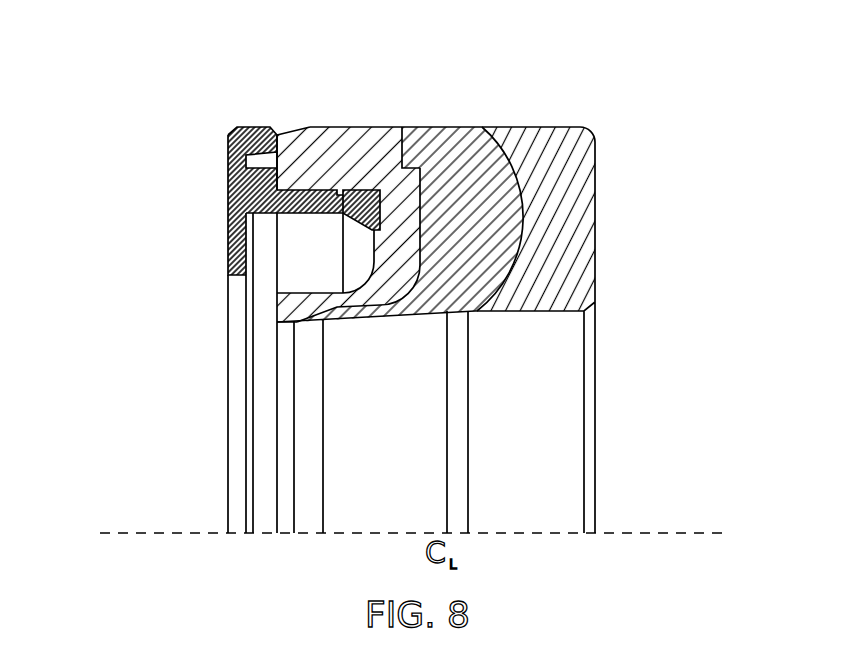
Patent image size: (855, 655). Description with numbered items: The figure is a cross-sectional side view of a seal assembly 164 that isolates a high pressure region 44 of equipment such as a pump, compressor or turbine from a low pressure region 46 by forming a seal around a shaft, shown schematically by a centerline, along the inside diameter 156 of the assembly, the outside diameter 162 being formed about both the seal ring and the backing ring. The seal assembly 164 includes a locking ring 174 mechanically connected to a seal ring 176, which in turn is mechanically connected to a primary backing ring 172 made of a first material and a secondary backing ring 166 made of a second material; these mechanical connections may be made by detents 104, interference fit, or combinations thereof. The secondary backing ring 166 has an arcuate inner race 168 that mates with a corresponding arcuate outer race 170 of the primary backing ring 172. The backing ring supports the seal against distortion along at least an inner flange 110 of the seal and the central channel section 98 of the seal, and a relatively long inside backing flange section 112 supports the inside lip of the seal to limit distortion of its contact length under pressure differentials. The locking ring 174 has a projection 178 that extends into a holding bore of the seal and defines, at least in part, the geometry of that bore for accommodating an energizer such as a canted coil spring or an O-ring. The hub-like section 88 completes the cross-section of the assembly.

The high pressure region 44 is at (128, 288).
The low pressure region 46 is at (717, 285).
The hub 88 is at (297, 266).
The center channel section 98 is at (397, 139).
The detent 104 is at (423, 142).
The inner flange 110 is at (289, 312).
The inside backing flange section 112 is at (376, 317).
The inside diameter 156 is at (333, 407).
The outside diameter 162 is at (333, 126).
The seal assembly 164 is at (577, 75).
The secondary backing ring 166 is at (600, 208).
The arcuate inner race 168 is at (519, 250).
The arcuate outer race 170 is at (592, 140).
The primary backing ring 172 is at (469, 284).
The locking ring 174 is at (222, 164).
The seal ring 176 is at (285, 119).
The projection 178 is at (277, 202).